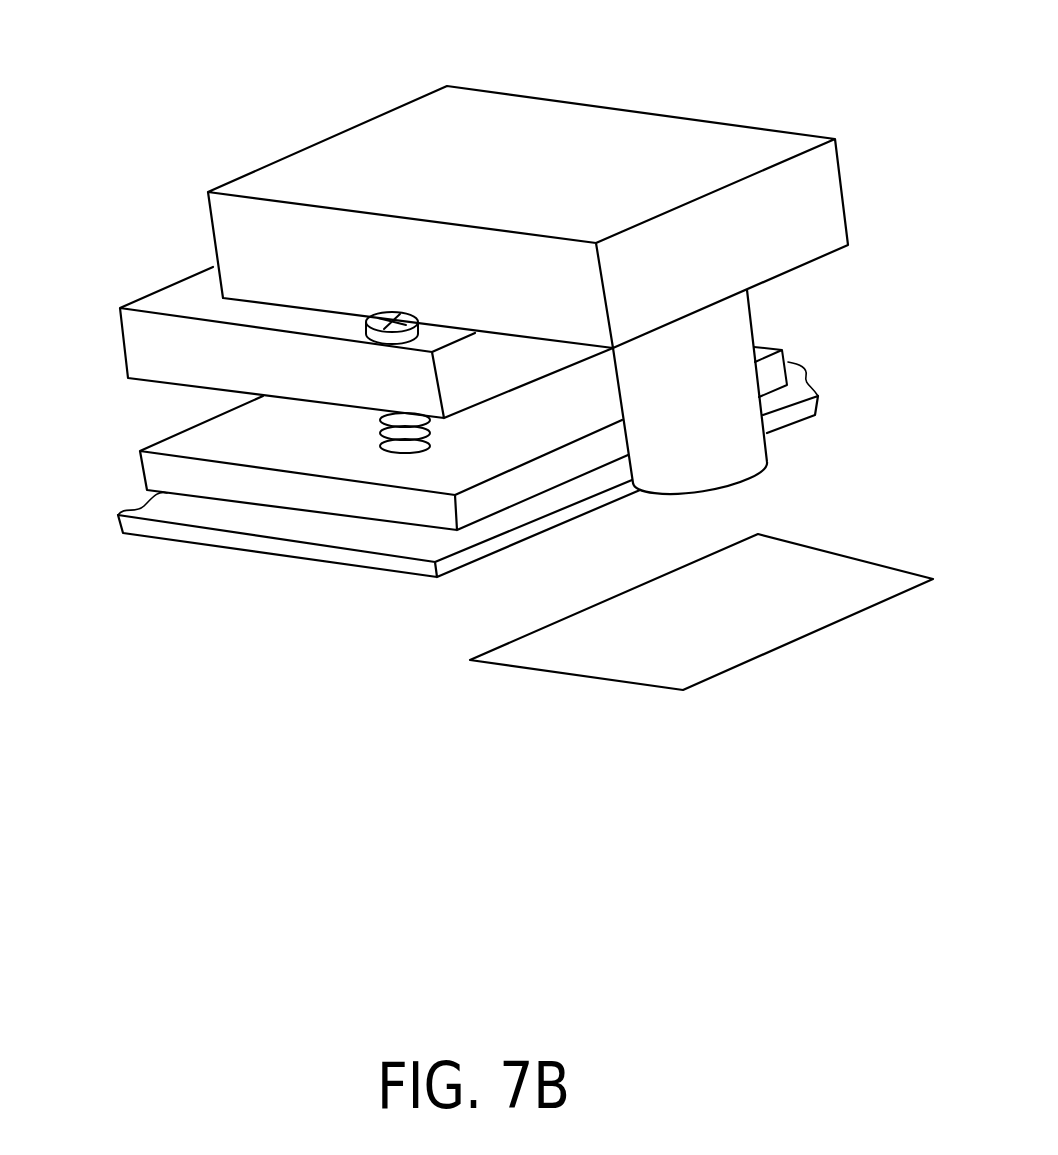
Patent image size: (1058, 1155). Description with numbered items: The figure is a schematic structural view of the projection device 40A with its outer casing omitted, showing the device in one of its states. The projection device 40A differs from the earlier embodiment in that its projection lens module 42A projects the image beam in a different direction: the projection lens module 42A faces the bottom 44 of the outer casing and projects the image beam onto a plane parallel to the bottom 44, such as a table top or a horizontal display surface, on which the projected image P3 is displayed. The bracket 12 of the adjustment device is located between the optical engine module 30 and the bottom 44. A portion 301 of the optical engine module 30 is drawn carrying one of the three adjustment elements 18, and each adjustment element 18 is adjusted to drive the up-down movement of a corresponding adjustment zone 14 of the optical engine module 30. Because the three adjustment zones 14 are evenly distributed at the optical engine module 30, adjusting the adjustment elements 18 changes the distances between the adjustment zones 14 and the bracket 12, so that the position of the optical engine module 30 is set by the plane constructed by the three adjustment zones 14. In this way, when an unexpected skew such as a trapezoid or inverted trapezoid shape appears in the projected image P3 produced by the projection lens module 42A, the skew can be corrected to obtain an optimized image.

The projection device 40A is at (177, 228).
The optical engine module 30 is at (515, 128).
The extension portion of pressing member 301 is at (140, 345).
The adjustment element 18 is at (377, 315).
The adjustment zone 14 is at (363, 343).
The bracket 12 is at (278, 485).
The bottom 44 is at (210, 547).
The projection lens module 42A is at (727, 348).
The projected image P3 is at (793, 605).